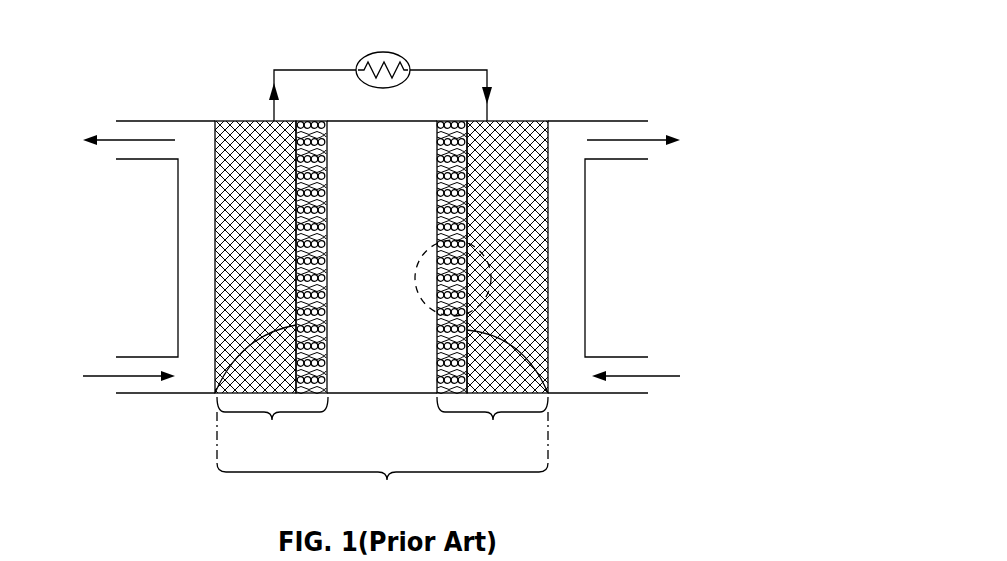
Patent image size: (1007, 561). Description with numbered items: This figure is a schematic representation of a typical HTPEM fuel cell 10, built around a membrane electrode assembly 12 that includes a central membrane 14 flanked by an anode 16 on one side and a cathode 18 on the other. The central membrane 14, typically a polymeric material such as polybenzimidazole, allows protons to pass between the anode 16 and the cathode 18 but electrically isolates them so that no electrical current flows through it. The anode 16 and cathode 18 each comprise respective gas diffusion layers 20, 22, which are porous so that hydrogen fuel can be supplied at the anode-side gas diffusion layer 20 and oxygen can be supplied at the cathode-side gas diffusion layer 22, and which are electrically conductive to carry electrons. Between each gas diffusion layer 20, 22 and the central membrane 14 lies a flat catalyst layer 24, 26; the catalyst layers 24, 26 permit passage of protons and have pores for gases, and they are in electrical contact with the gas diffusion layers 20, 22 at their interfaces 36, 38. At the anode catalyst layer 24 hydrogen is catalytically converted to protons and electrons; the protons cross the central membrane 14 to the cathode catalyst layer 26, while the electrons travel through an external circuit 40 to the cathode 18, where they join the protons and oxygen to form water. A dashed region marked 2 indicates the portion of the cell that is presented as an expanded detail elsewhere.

The HTPEM fuel cell 10 is at (584, 38).
The membrane electrode assembly 12 is at (382, 463).
The central membrane 14 is at (373, 393).
The anode 16 is at (272, 424).
The cathode 18 is at (492, 424).
The anode-side gas diffusion layer 20 is at (252, 121).
The cathode-side gas diffusion layer 22 is at (517, 121).
The anode catalyst layer 24 is at (313, 121).
The cathode catalyst layer 26 is at (452, 121).
The interface 36 is at (215, 393).
The interface 38 is at (548, 393).
The external circuit 40 is at (383, 52).
The expanded detail 2 is at (413, 278).